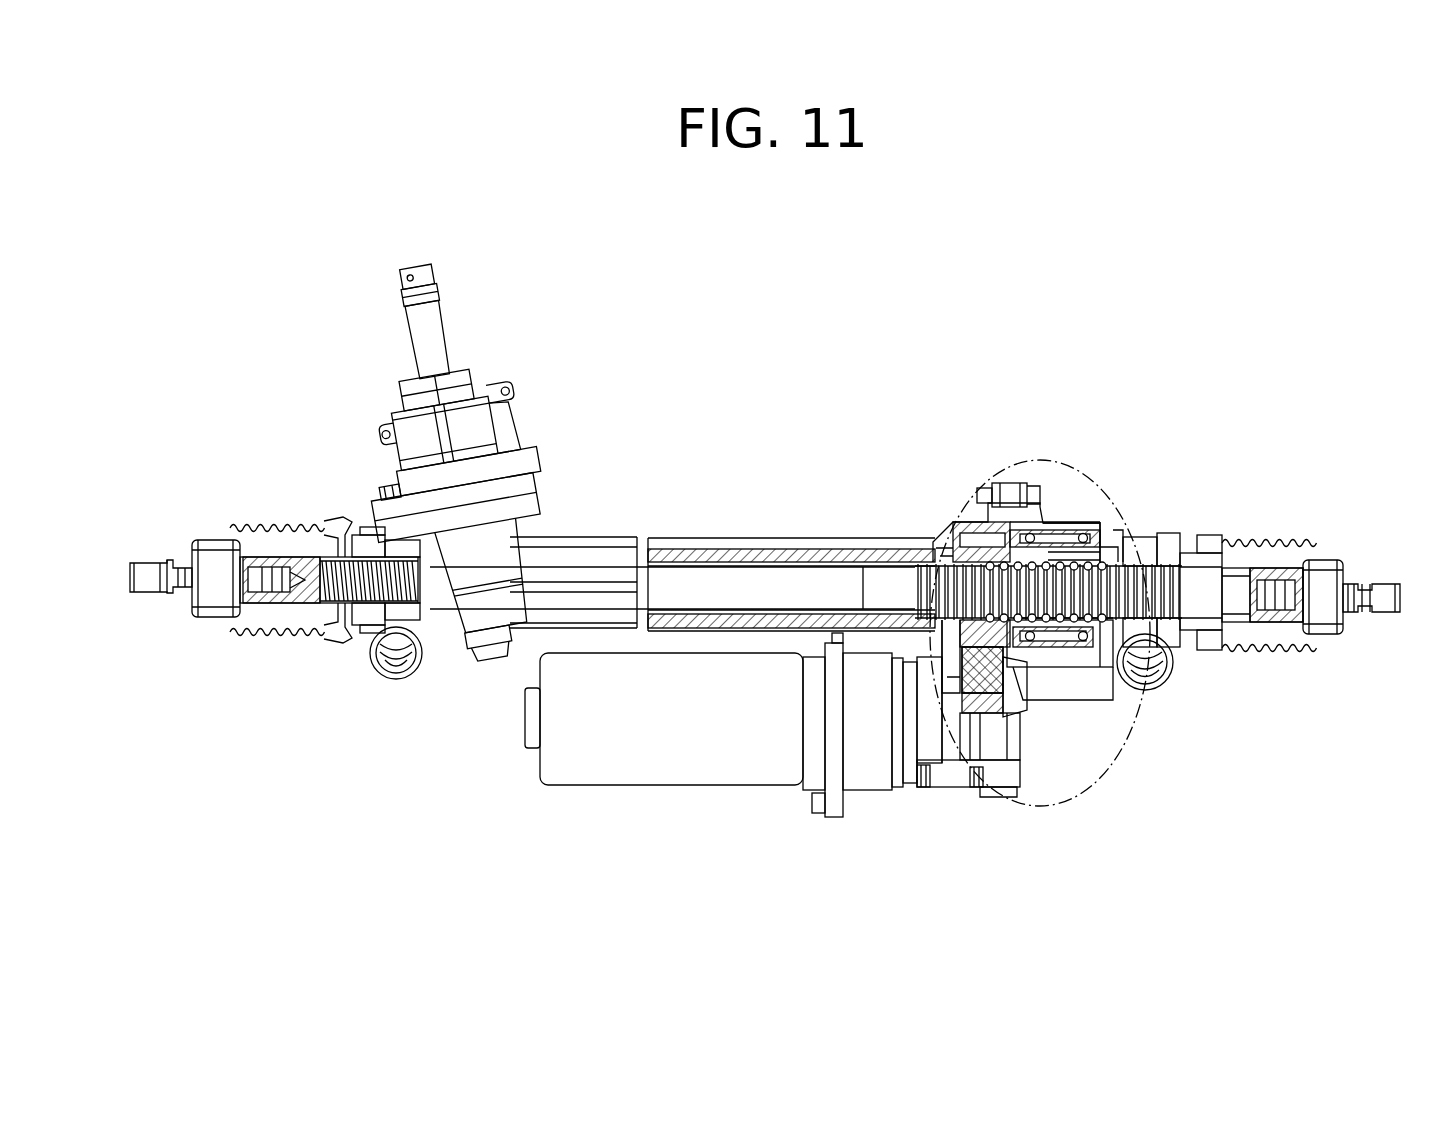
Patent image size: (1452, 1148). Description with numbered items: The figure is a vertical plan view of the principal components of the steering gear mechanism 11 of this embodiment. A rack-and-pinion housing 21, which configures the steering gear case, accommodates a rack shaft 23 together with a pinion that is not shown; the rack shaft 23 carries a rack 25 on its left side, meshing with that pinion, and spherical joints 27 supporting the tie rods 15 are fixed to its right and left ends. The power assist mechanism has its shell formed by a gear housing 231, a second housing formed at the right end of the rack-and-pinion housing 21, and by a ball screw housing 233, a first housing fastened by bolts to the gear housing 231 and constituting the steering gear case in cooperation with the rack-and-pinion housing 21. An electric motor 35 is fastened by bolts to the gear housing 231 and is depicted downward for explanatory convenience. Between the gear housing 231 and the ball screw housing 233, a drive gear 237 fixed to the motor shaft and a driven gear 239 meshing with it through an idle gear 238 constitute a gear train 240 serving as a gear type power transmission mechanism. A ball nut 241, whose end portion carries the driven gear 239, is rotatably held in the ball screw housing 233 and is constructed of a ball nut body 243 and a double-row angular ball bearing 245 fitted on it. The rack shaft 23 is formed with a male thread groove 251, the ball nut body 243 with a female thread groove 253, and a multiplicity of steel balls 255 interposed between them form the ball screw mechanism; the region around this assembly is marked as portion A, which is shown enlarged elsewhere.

The steering gear mechanism 11 is at (832, 334).
The tie rod 15 is at (148, 568).
The rack-and-pinion housing 21 is at (608, 528).
The rack shaft 23 is at (757, 546).
The rack 25 is at (348, 540).
The spherical joint 27 is at (208, 543).
The electric motor 35 is at (690, 770).
The gear housing 231 is at (952, 515).
The ball screw housing 233 is at (1095, 525).
The drive gear 237 is at (990, 678).
The idle gear 238 is at (1020, 690).
The driven gear 239 is at (945, 545).
The gear train 240 is at (925, 664).
The ball nut 241 is at (1120, 540).
The ball nut body 243 is at (1145, 690).
The double-row angular ball bearing 245 is at (1085, 650).
The male thread groove 251 is at (1165, 630).
The female thread groove 253 is at (1010, 500).
The steel ball 255 is at (1058, 525).
The portion A is at (1018, 805).